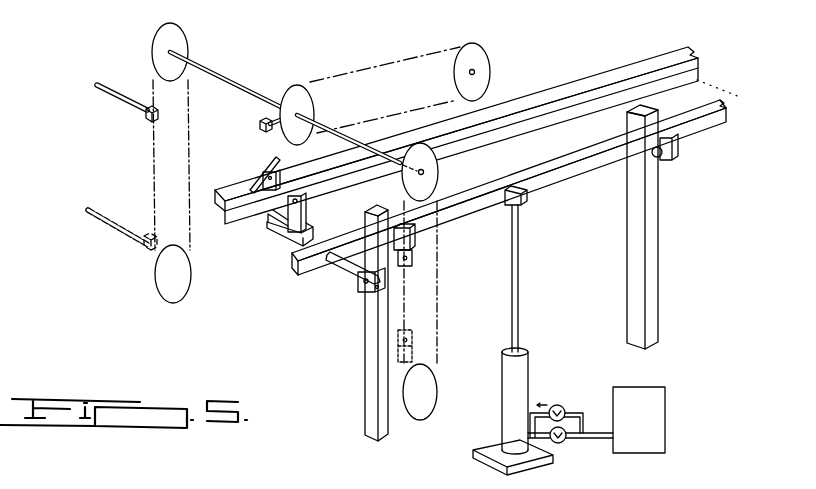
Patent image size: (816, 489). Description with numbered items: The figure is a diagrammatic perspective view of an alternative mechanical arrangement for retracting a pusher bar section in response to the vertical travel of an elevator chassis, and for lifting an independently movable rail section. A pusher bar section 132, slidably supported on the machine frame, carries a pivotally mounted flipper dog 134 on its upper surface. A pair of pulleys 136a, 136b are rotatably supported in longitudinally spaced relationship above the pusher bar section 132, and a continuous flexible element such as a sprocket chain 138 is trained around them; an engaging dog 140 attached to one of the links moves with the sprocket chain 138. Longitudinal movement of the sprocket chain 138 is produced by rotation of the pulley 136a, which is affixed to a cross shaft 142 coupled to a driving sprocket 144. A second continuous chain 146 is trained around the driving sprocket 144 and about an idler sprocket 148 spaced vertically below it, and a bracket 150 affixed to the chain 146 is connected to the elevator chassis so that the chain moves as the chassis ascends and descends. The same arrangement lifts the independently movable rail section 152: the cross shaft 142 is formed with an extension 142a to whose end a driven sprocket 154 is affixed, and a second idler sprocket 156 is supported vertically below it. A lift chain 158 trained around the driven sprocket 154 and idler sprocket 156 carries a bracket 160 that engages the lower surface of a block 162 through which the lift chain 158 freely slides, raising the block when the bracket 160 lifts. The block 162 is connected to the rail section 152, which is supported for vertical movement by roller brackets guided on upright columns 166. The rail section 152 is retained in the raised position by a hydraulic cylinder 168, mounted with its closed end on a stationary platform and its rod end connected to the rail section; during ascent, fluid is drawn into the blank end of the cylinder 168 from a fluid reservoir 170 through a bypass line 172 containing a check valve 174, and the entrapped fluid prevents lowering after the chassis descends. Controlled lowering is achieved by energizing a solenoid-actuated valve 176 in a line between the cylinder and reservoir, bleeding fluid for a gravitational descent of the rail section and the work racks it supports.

The pusher bar section 132 is at (547, 98).
The flipper dog 134 is at (260, 162).
The pulley 136a is at (292, 98).
The pulley 136b is at (473, 52).
The sprocket chain 138 is at (410, 55).
The engaging dog 140 is at (262, 124).
The cross shaft 142 is at (240, 57).
The extension 142a is at (387, 147).
The driving sprocket 144 is at (175, 33).
The second continuous chain 146 is at (153, 159).
The idler sprocket 148 is at (160, 280).
The bracket 150 is at (97, 93).
The independently movable rail section 152 is at (553, 175).
The driven sprocket 154 is at (440, 168).
The second idler sprocket 156 is at (421, 408).
The lift chain 158 is at (442, 295).
The bracket 160 is at (415, 258).
The block 162 is at (415, 240).
The upright columns 166 is at (370, 333).
The hydraulic cylinder 168 is at (517, 368).
The fluid reservoir 170 is at (650, 422).
The bypass line 172 is at (581, 410).
The check valve 174 is at (560, 405).
The solenoid-actuated valve 176 is at (563, 443).